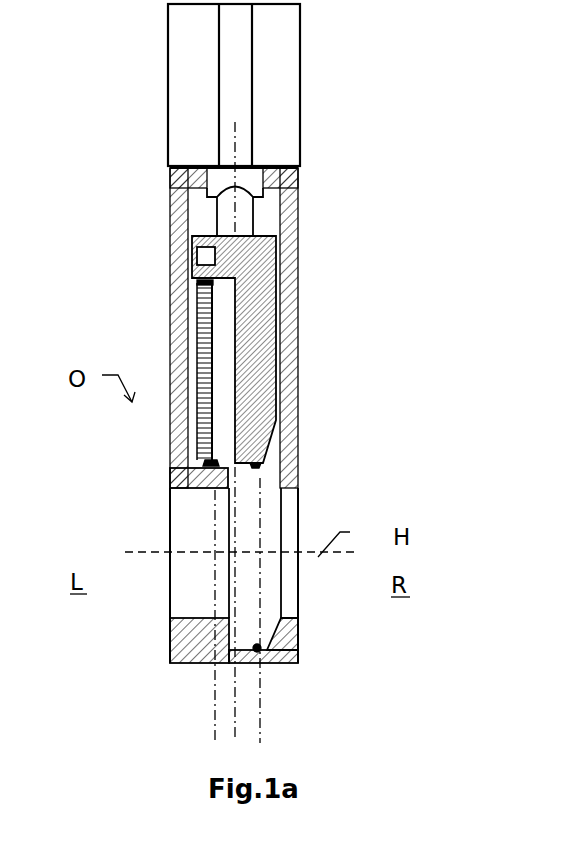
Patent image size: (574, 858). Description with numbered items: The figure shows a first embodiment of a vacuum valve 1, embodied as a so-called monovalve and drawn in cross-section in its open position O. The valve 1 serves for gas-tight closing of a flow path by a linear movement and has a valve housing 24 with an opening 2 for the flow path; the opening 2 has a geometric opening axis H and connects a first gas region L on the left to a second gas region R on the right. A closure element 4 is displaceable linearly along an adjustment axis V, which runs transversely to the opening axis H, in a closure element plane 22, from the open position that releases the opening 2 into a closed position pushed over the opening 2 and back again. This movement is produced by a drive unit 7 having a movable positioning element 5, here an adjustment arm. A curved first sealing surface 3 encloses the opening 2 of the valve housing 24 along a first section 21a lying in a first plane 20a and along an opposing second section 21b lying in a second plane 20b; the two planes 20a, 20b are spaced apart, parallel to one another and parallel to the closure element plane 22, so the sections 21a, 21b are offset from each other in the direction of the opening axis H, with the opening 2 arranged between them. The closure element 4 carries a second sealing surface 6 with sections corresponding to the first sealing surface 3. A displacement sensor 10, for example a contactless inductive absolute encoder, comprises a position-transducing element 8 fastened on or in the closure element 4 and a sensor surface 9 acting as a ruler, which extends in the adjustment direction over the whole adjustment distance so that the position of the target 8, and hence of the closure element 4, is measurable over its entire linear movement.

The vacuum valve 1 is at (124, 59).
The opening 2 is at (190, 575).
The first sealing surface 3 is at (214, 563).
The closure element 4 is at (228, 345).
The positioning element 5 is at (286, 212).
The second sealing surface 6 is at (240, 386).
The drive unit 7 is at (200, 85).
The position-transducing element 8 is at (205, 255).
The sensor surface 9 is at (147, 371).
The displacement sensor 10 is at (147, 327).
The first plane 20a is at (284, 639).
The second plane 20b is at (307, 614).
The first section 21a is at (145, 506).
The second section 21b is at (343, 631).
The closure element plane 22 is at (172, 431).
The valve housing 24 is at (274, 328).